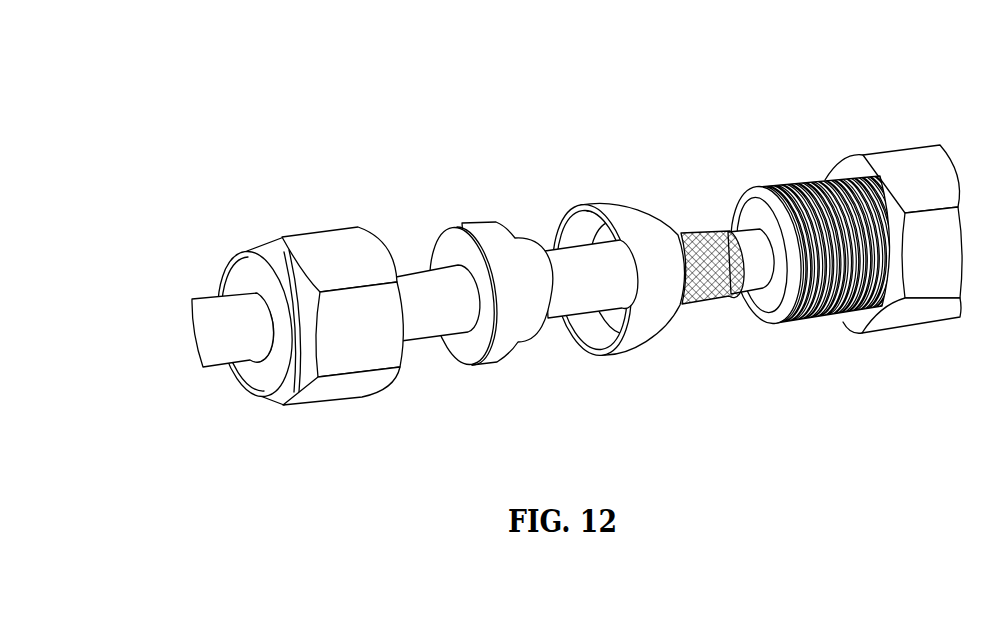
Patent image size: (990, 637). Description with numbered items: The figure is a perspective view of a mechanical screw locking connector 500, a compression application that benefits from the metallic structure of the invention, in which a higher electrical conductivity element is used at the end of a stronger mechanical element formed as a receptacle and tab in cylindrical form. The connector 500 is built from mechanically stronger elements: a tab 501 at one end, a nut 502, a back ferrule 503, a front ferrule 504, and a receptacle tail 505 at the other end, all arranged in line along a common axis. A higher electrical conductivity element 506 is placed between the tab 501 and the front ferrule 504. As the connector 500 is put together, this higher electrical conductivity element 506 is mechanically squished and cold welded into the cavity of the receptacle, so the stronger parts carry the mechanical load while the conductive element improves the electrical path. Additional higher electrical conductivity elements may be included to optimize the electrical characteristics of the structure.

The mechanical screw locking connector 500 is at (694, 84).
The tab 501 is at (245, 350).
The nut 502 is at (307, 228).
The back ferrule 503 is at (472, 227).
The front ferrule 504 is at (621, 203).
The receptacle tail 505 is at (878, 150).
The higher electrical conductivity element 506 is at (712, 298).